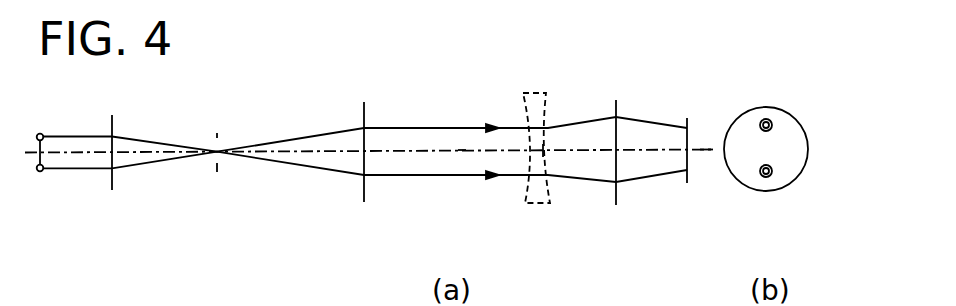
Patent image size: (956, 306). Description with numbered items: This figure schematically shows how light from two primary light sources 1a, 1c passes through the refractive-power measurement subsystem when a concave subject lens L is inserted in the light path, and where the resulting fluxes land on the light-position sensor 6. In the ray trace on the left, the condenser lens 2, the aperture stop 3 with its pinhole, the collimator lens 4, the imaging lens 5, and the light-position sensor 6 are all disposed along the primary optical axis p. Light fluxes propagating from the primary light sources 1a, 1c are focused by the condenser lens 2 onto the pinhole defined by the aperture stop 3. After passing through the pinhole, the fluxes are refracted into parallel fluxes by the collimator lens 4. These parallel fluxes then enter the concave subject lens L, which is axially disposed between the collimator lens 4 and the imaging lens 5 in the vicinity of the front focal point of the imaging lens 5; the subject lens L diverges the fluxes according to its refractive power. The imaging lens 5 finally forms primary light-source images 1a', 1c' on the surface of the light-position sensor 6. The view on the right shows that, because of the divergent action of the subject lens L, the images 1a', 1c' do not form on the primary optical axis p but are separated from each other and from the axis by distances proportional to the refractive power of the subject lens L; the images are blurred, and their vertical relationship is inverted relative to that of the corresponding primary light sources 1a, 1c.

The primary light source 1a is at (56, 112).
The primary light source 1c is at (50, 200).
The condenser lens 2 is at (113, 124).
The aperture stop 3 is at (218, 133).
The collimator lens 4 is at (366, 116).
The subject lens L is at (548, 95).
The primary optical axis p is at (466, 150).
The imaging lens 5 is at (616, 113).
The light-position sensor 6 is at (684, 127).
The primary light-source image 1c' is at (749, 91).
The primary light-source image 1a' is at (782, 206).